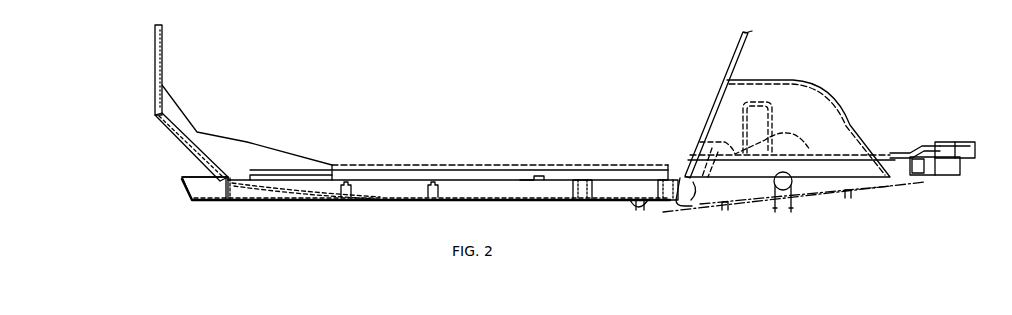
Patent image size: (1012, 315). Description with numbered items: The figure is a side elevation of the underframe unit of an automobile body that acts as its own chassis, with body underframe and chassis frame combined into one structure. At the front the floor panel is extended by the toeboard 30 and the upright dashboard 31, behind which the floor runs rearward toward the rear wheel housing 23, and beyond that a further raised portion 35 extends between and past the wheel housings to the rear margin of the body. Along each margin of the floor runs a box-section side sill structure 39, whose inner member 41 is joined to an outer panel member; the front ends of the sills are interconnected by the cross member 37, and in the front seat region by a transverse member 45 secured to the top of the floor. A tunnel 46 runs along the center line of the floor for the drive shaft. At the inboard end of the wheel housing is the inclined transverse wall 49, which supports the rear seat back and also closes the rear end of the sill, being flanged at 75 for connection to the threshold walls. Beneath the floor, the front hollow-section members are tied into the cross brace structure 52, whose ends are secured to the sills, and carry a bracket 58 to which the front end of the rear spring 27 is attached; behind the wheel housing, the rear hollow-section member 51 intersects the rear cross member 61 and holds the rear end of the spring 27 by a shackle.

The rear wheel housing 23 is at (825, 103).
The rear spring 27 is at (830, 208).
The toeboard 30 is at (181, 148).
The dashboard 31 is at (162, 48).
The raised portion 35 is at (899, 144).
The cross member 37 is at (223, 203).
The side sill structure 39 is at (458, 200).
The inner member 41 is at (485, 185).
The transverse member 45 is at (389, 208).
The tunnel 46 is at (304, 167).
The inclined transverse wall 49 is at (740, 52).
The rear hollow-section member 51 is at (942, 171).
The cross brace structure 52 is at (583, 205).
The bracket 58 is at (633, 214).
The rear cross member 61 is at (975, 152).
The flange 75 is at (680, 210).